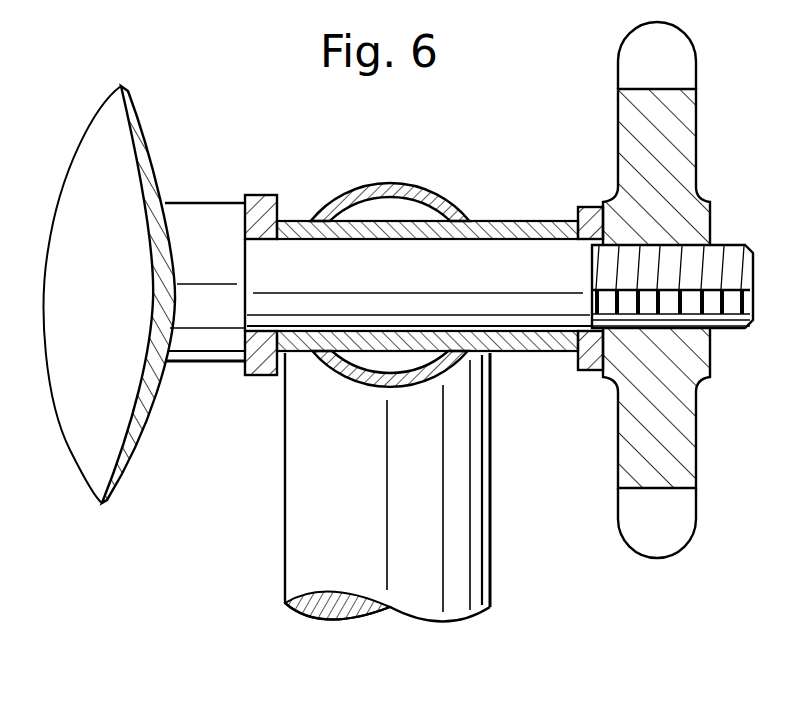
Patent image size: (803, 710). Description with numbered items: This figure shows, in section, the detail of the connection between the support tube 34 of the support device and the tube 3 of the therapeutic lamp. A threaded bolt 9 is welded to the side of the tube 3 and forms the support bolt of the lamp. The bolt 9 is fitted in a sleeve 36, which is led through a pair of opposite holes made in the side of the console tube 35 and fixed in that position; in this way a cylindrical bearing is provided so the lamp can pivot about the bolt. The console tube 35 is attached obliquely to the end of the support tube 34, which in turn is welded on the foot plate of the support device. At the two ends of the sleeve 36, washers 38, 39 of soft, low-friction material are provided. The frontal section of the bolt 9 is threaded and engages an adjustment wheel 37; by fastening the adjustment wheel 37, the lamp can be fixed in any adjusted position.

The tube 3 is at (136, 133).
The threaded bolt 9 is at (213, 338).
The support tube 34 is at (478, 484).
The console tube 35 is at (415, 186).
The sleeve 36 is at (513, 223).
The adjustment wheel 37 is at (678, 133).
The washer 38 is at (258, 196).
The washer 39 is at (587, 207).